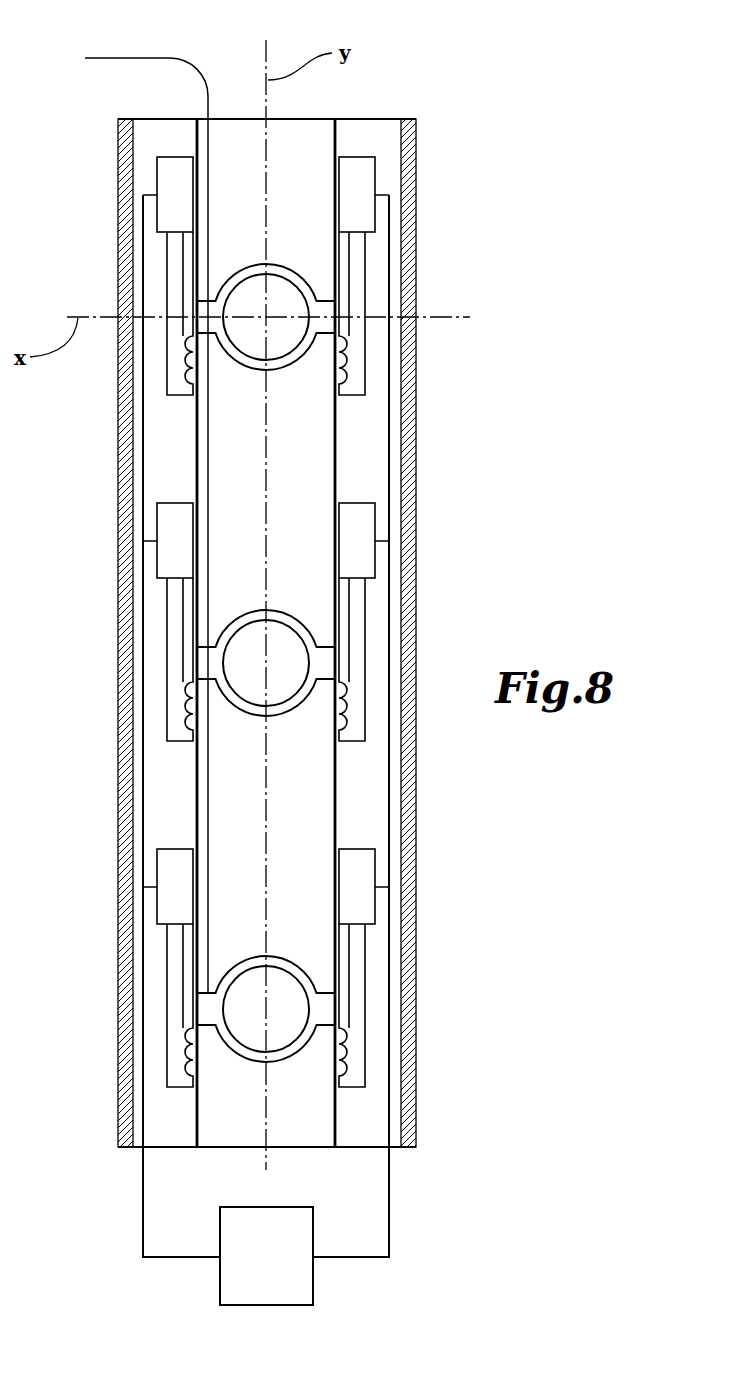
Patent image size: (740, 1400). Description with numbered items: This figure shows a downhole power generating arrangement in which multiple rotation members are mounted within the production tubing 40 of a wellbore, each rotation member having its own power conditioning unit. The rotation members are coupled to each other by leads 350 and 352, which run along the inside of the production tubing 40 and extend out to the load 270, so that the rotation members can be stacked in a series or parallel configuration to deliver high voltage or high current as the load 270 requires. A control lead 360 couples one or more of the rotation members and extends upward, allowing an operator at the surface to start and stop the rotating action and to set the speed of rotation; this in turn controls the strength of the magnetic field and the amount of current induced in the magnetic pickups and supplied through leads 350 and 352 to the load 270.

The production tubing 40 is at (302, 143).
The load 270 is at (287, 1297).
The lead 350 is at (143, 802).
The lead 352 is at (389, 802).
The control lead 360 is at (130, 58).